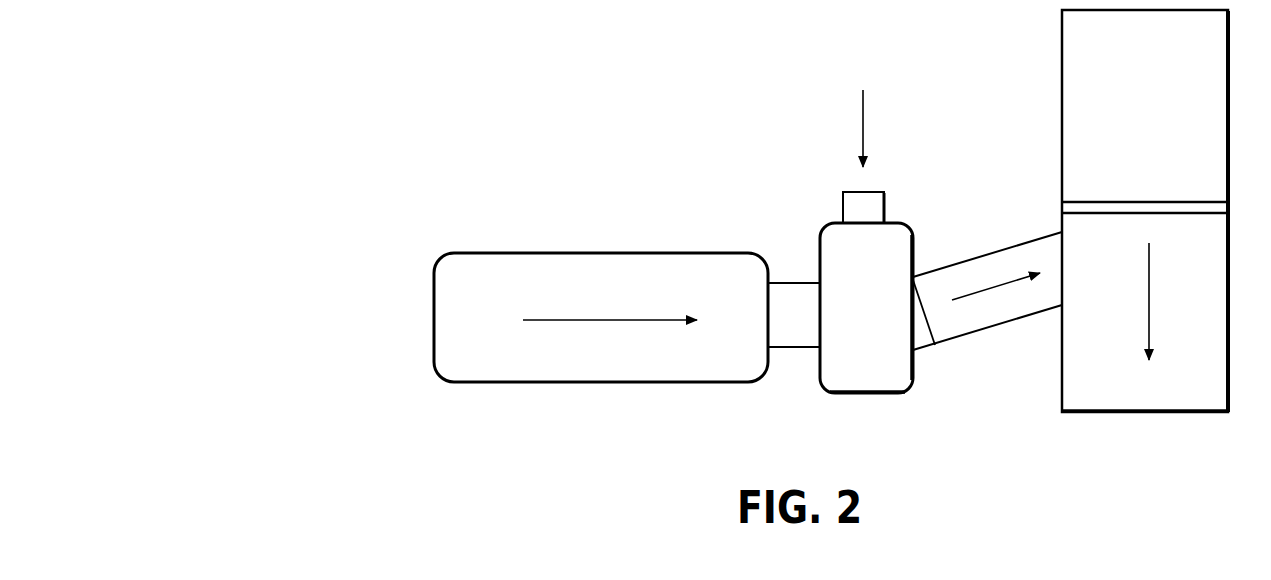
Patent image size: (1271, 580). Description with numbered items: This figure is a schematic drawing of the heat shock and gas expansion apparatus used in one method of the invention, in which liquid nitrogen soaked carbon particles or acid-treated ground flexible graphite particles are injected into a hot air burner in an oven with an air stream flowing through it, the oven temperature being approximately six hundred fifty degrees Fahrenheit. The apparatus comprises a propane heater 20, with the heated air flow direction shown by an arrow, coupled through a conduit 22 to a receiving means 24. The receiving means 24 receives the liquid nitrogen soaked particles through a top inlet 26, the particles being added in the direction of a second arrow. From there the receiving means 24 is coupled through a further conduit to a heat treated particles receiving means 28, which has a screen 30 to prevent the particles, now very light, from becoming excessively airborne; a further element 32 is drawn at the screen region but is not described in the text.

The propane heater 20 is at (578, 253).
The conduit 22 is at (807, 283).
The receiving means 24 is at (848, 192).
The top inlet 26 is at (840, 394).
The heat treated particles receiving means 28 is at (947, 342).
The screen 30 is at (1061, 35).
The inlet slot / partition 32 is at (1085, 201).